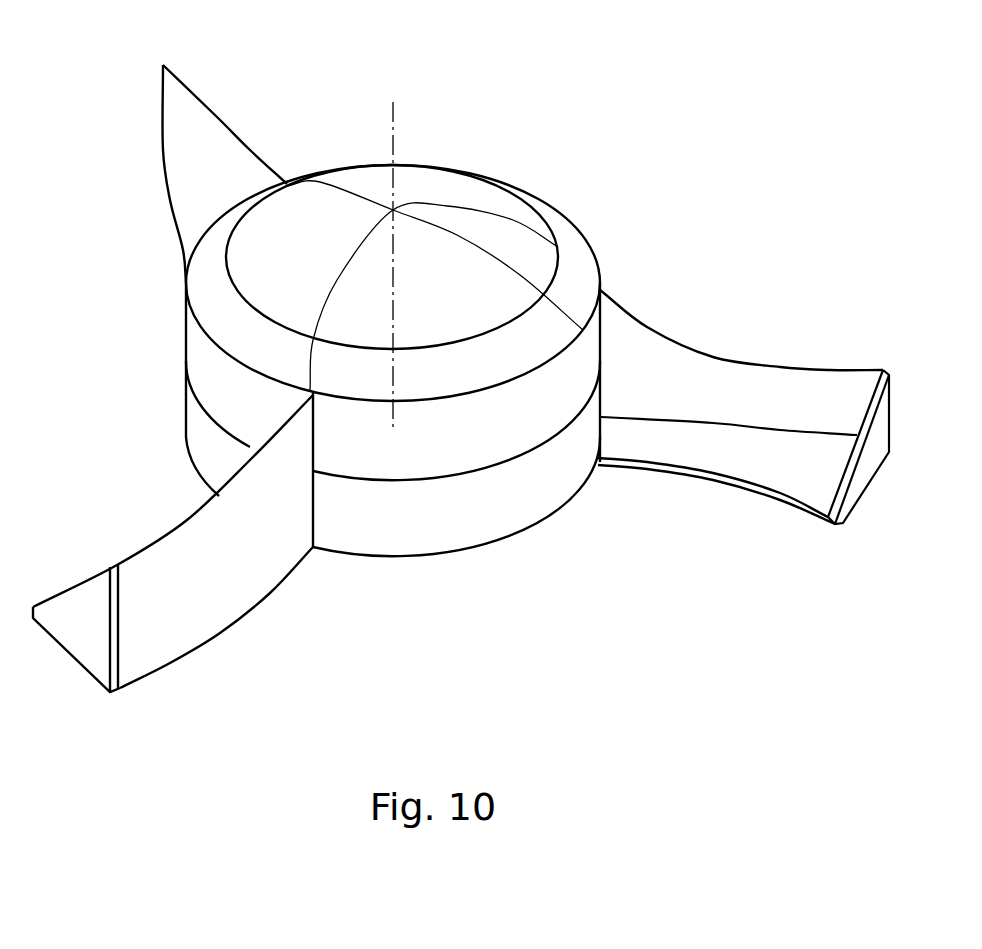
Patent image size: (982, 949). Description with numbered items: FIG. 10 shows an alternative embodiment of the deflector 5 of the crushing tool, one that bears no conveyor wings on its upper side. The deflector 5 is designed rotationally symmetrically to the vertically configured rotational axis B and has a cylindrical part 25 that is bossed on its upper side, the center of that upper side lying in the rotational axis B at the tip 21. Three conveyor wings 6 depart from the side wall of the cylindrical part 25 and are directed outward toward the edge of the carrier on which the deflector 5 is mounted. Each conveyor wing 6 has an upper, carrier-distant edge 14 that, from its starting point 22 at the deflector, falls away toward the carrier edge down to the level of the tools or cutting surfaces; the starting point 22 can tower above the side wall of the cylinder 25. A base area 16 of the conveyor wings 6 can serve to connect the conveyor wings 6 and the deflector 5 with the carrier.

The deflector 5 is at (535, 543).
The conveyor wings 6 is at (715, 383).
The edge of the conveyor wings 14 is at (827, 367).
The base area of the conveyor wings 16 is at (795, 460).
The tip 21 is at (198, 323).
The starting point 22 is at (310, 390).
The cylindrical part of the deflector 25 is at (397, 510).
The rotational axis B is at (390, 115).